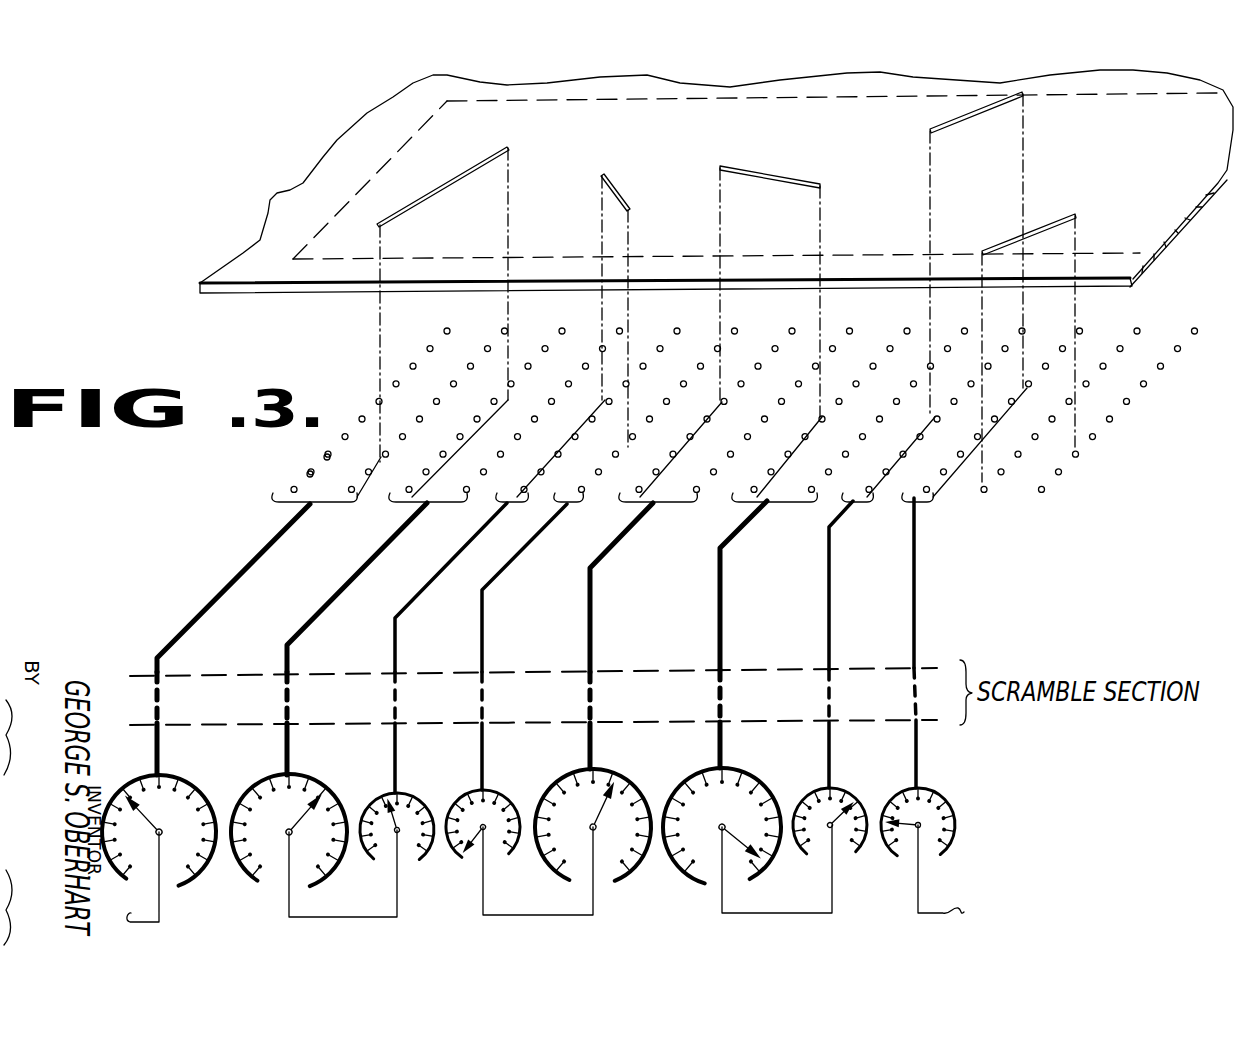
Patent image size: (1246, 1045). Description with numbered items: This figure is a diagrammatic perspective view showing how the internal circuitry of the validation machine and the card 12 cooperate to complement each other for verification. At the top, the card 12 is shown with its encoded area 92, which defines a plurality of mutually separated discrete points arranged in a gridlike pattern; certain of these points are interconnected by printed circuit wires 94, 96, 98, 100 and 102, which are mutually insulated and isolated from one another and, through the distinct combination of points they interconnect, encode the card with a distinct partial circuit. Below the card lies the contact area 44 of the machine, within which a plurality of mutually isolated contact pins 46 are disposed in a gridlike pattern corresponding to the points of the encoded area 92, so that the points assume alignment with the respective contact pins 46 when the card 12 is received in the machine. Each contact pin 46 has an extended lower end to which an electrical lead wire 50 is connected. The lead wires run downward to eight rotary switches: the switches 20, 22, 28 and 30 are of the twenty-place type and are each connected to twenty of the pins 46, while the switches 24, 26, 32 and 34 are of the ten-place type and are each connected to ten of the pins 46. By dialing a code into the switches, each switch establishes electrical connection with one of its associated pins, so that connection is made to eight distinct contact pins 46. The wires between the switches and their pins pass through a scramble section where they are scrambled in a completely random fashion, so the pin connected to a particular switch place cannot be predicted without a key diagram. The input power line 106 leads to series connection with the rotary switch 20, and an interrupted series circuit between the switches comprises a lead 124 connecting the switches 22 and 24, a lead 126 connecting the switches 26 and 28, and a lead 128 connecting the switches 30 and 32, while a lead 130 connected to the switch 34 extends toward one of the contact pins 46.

The card 12 is at (250, 222).
The encoded area 92 is at (372, 177).
The printed circuit wire 94 is at (463, 171).
The printed circuit wire 96 is at (617, 188).
The printed circuit wire 98 is at (767, 150).
The printed circuit wire 100 is at (983, 104).
The printed circuit wire 102 is at (1056, 215).
The contact area 44 is at (410, 346).
The contact pin 46 is at (306, 474).
The lead wire 50 is at (363, 485).
The rotary switch 20 is at (195, 875).
The rotary switch 22 is at (262, 883).
The rotary switch 24 is at (420, 860).
The rotary switch 26 is at (508, 855).
The rotary switch 28 is at (630, 873).
The rotary switch 30 is at (758, 873).
The rotary switch 32 is at (855, 848).
The rotary switch 34 is at (948, 850).
The input power line 106 is at (148, 927).
The lead 124 is at (357, 918).
The lead 126 is at (555, 917).
The lead 128 is at (797, 918).
The lead 130 is at (943, 915).